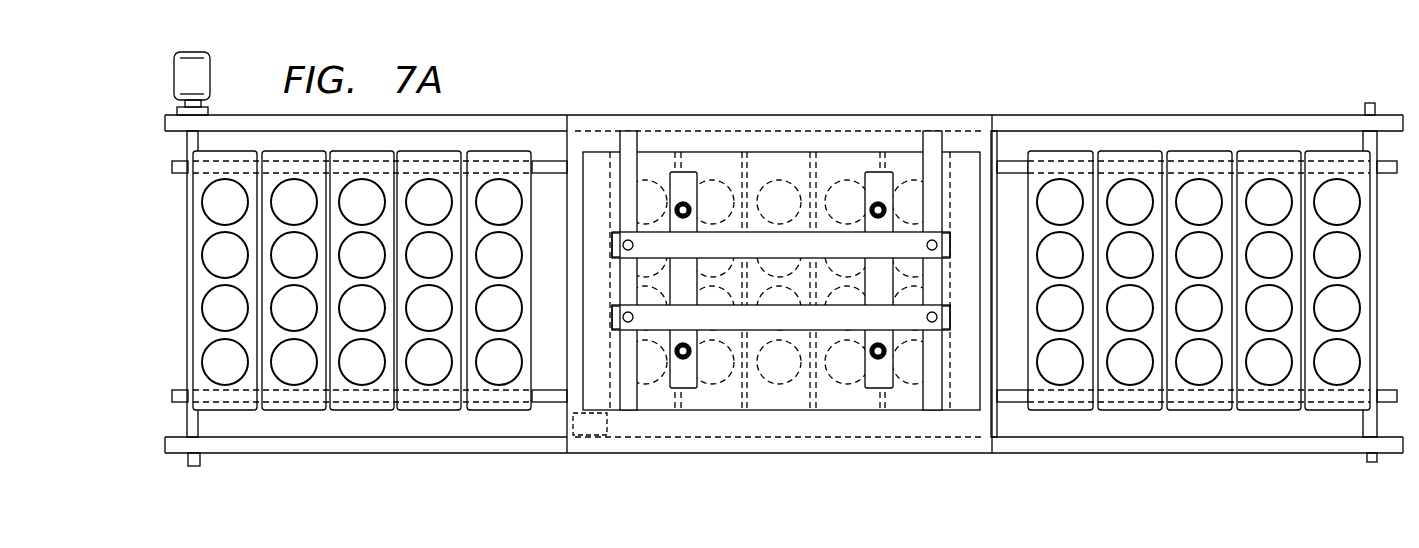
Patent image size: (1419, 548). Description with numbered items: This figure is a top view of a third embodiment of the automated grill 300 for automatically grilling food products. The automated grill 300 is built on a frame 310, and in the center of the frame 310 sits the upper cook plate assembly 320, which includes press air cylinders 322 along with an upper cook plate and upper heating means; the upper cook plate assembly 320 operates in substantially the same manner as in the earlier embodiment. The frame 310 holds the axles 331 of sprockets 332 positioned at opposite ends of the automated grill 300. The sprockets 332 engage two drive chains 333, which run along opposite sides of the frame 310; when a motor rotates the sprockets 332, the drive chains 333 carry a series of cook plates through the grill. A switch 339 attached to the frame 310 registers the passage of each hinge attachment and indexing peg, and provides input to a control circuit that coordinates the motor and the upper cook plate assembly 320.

The automated grill 300 is at (933, 85).
The frame 310 is at (1200, 455).
The upper cook plate assembly 320 is at (703, 400).
The press air cylinders 322 is at (683, 201).
The axles 331 is at (186, 463).
The sprockets 332 is at (173, 392).
The drive chains 333 is at (1008, 160).
The switch 339 is at (585, 436).